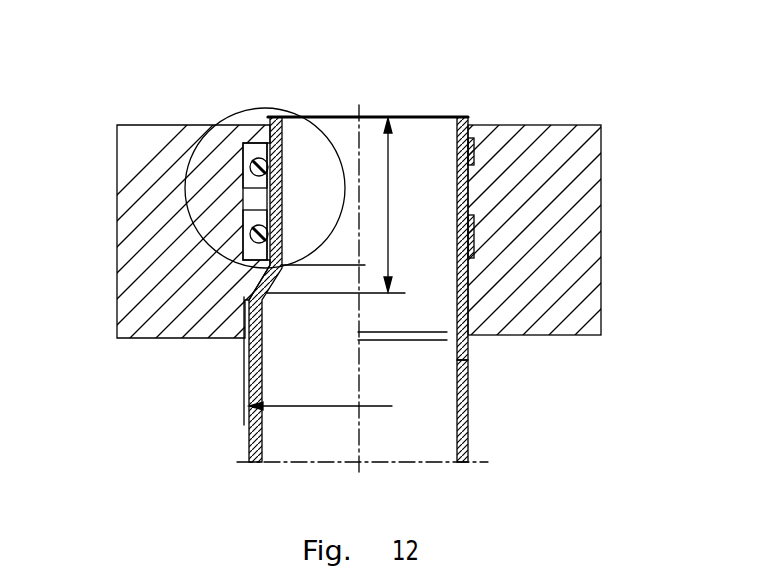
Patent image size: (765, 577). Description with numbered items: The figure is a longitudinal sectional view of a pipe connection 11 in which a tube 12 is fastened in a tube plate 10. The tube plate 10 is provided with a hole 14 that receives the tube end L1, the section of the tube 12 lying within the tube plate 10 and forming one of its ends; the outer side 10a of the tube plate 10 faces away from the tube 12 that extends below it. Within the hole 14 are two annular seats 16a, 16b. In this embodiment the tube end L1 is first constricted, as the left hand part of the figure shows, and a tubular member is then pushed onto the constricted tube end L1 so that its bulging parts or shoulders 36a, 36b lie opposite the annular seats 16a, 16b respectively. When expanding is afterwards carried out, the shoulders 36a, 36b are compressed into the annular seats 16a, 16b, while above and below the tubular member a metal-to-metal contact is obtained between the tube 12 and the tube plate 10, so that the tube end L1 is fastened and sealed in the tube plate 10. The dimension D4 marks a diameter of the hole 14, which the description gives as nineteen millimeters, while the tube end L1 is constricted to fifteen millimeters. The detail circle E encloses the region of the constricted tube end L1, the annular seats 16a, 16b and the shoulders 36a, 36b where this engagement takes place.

The outer side of the tube plate 10a is at (140, 124).
The tube plate 10 is at (501, 193).
The hole 14 is at (233, 337).
The pipe connection 11 is at (478, 350).
The tube 12 is at (463, 423).
The shoulder of the tubular member 36a is at (472, 170).
The shoulder of the tubular member 36b is at (472, 240).
The annular seat 16a is at (243, 165).
The annular seat 16b is at (247, 258).
The detail region E is at (247, 110).
The tube end L1 is at (390, 217).
The hole diameter D4 is at (318, 368).